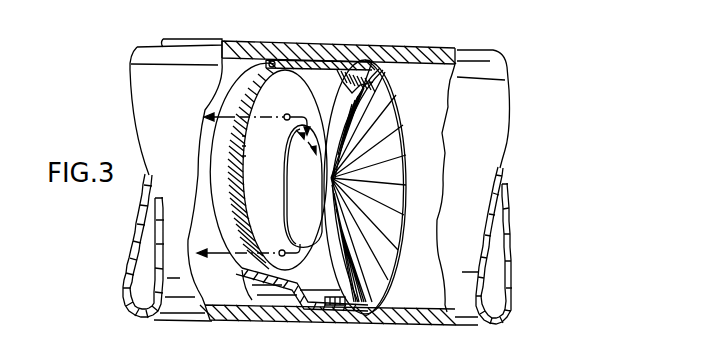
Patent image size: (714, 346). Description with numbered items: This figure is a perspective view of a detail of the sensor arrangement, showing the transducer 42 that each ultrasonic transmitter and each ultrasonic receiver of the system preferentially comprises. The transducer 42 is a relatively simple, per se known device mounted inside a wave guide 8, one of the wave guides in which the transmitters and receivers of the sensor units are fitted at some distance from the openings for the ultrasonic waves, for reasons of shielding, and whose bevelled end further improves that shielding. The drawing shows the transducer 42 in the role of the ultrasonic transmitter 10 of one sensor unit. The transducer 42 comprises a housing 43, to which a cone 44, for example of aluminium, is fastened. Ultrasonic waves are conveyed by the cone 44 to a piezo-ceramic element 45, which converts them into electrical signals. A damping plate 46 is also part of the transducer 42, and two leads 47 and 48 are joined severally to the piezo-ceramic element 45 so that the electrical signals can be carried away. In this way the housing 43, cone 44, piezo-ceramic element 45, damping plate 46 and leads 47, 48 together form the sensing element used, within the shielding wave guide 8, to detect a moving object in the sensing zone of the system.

The wave guide 8 is at (440, 47).
The ultrasonic transmitter 10 is at (356, 43).
The transducer 42 is at (412, 181).
The housing 43 is at (270, 63).
The cone 44 is at (390, 150).
The piezo-ceramic element 45 is at (286, 176).
The damping plate 46 is at (242, 156).
The lead 47 is at (215, 114).
The lead 48 is at (218, 252).